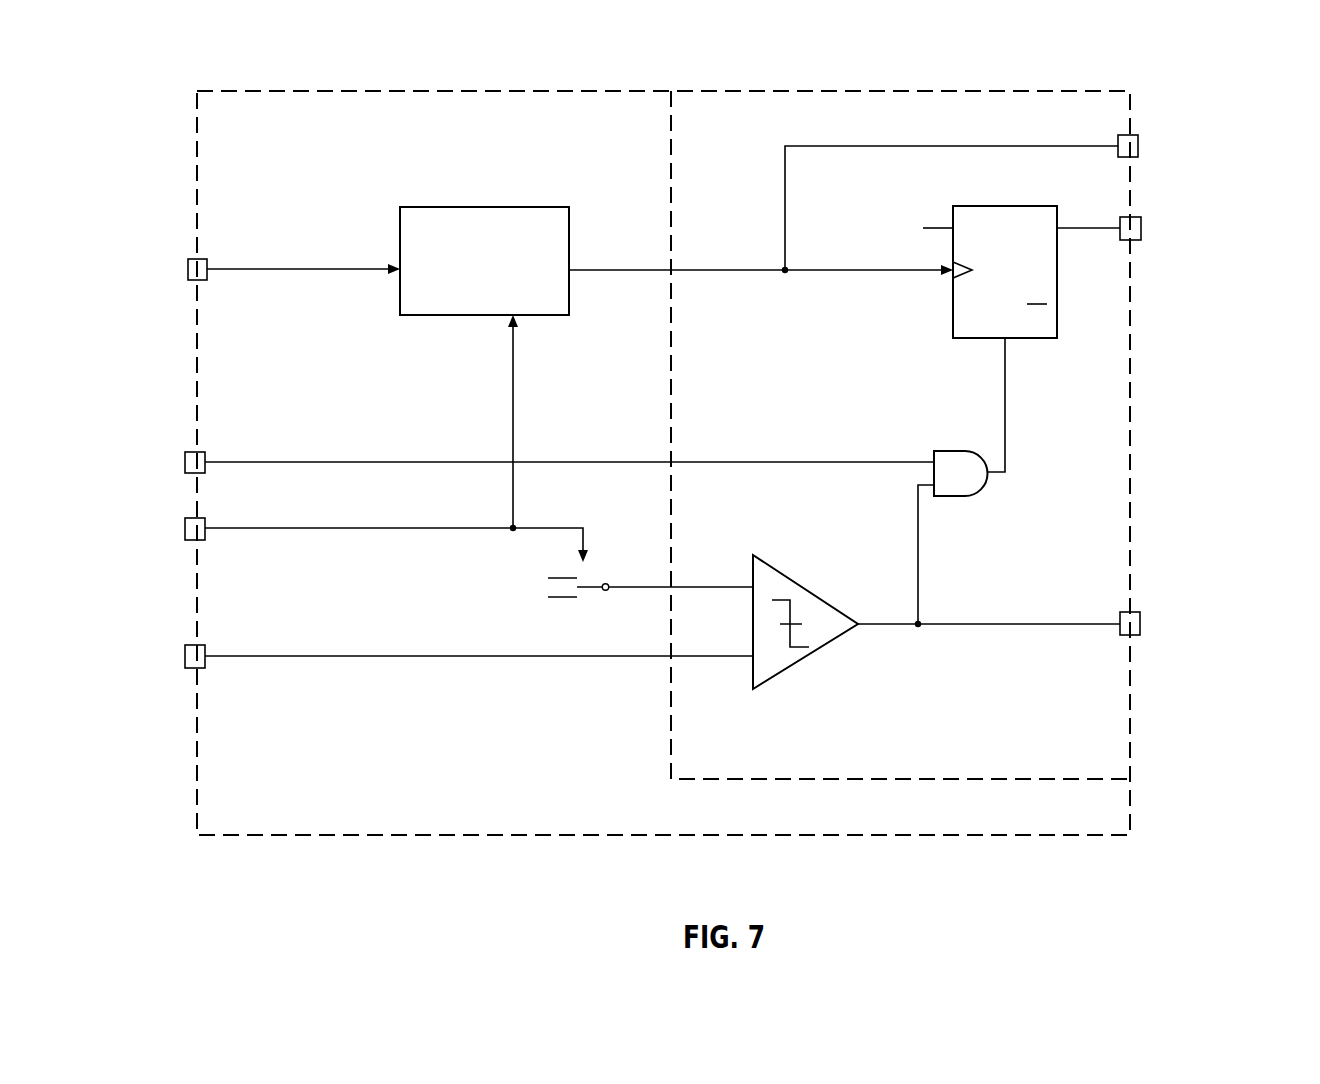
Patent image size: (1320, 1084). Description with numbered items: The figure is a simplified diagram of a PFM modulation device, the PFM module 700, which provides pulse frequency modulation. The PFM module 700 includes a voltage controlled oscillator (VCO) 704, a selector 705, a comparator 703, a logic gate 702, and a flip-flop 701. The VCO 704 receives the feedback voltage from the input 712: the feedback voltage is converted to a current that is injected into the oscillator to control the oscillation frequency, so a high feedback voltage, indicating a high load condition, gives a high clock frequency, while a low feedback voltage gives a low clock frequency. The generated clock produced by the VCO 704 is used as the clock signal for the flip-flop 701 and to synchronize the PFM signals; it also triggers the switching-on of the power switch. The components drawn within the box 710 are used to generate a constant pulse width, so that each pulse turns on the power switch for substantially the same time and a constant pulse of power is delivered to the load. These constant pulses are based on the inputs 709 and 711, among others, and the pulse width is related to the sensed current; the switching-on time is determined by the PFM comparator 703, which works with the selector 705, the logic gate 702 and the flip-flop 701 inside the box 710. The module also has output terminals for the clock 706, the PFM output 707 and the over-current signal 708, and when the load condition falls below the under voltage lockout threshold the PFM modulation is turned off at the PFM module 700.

The PFM module 700 is at (1195, 397).
The flip-flop 701 is at (1050, 340).
The logic gate 702 is at (988, 494).
The comparator 703 is at (808, 584).
The voltage controlled oscillator (VCO) 704 is at (571, 209).
The selector 705 is at (576, 600).
The CLK output pin 706 is at (1137, 118).
The PFM_out output pin 707 is at (1135, 223).
The OCP output pin 708 is at (1132, 607).
The input 709 is at (187, 670).
The box 710 is at (812, 84).
The input 711 is at (188, 450).
The input 712 is at (188, 280).